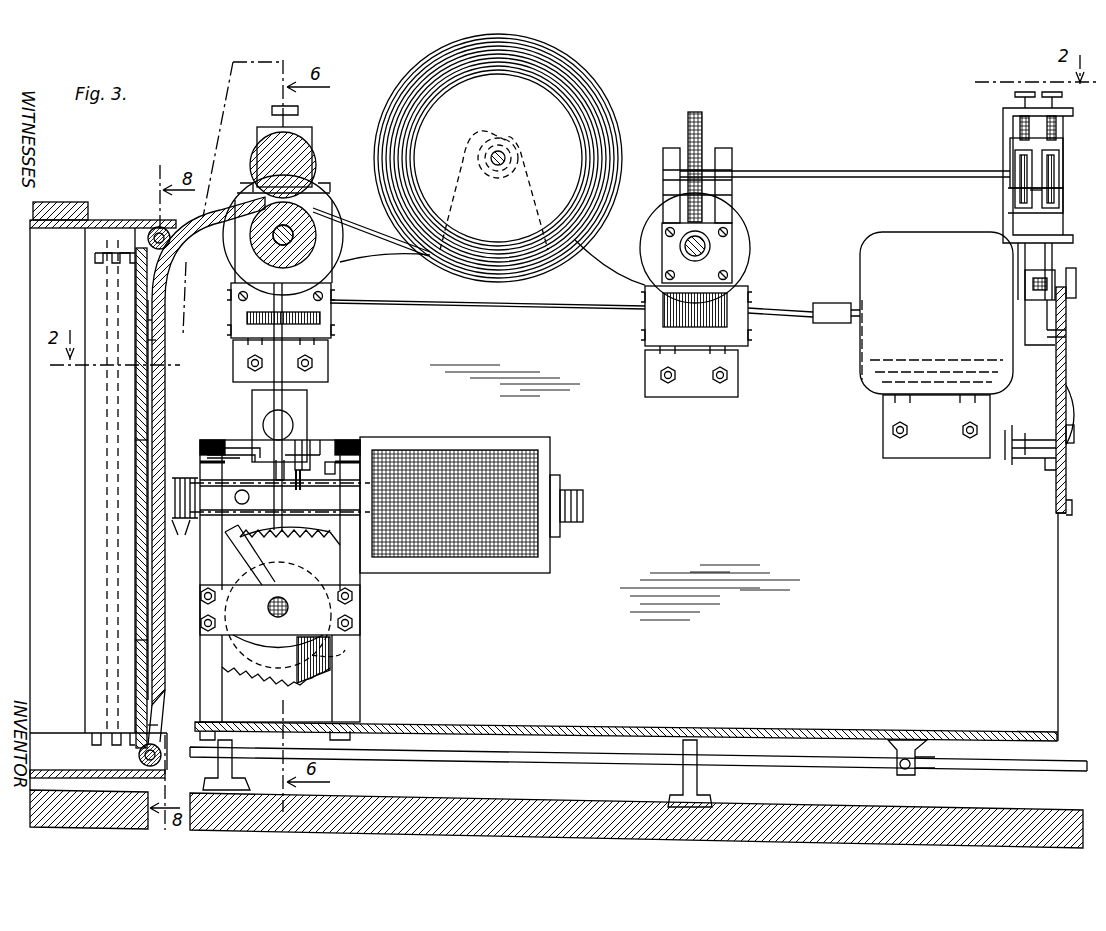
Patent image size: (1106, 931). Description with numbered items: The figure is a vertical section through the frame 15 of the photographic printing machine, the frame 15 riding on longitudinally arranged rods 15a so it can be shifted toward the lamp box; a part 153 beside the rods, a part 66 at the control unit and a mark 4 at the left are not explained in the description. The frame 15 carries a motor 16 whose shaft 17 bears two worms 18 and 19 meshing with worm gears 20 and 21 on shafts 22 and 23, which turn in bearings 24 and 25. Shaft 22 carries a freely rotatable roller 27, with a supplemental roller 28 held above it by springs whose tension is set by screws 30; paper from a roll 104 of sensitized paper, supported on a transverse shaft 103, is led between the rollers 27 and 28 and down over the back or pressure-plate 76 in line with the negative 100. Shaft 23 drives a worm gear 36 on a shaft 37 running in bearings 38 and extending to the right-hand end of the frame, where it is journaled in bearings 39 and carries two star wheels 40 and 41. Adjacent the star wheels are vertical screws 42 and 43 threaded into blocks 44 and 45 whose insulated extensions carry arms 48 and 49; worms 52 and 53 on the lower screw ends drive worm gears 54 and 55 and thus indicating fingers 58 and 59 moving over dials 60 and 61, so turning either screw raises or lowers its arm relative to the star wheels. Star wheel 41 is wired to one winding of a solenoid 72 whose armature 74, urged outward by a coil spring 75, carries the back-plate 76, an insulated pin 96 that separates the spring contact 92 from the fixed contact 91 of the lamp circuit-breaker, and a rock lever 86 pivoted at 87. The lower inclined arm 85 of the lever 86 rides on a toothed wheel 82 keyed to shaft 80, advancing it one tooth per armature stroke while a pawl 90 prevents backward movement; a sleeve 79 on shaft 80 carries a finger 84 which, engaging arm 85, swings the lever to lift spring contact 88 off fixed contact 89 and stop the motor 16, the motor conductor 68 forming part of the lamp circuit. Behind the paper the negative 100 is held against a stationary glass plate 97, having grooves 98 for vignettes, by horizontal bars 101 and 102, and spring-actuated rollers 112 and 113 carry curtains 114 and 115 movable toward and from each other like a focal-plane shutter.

The housing wall 4 is at (35, 300).
The frame 15 is at (626, 627).
The rods 15a is at (828, 766).
The motor 16 is at (936, 345).
The shaft 17 is at (830, 325).
The worm 18 is at (320, 322).
The worm 19 is at (665, 320).
The worm gear 20 is at (330, 213).
The worm gear 21 is at (645, 243).
The shaft 22 is at (290, 240).
The shaft 23 is at (708, 248).
The bearing 24 is at (330, 270).
The bearing 25 is at (645, 298).
The roller 27 is at (260, 240).
The supplemental roller 28 is at (255, 155).
The screws 30 is at (272, 110).
The worm gear 36 is at (700, 118).
The shaft 37 is at (798, 178).
The bearings 38 is at (735, 152).
The bearings 39 is at (1003, 165).
The star wheel 40 is at (1058, 195).
The star wheel 41 is at (1015, 193).
The vertical screw 42 is at (1058, 130).
The vertical screw 43 is at (1018, 128).
The block 44 is at (1063, 148).
The block 45 is at (1015, 155).
The arm 48 is at (1059, 160).
The arm 49 is at (1020, 160).
The worm 52 is at (1040, 281).
The worm 53 is at (1020, 432).
The worm gear 54 is at (1048, 325).
The worm gear 55 is at (1025, 462).
The indicating finger 58 is at (1068, 282).
The indicating finger 59 is at (1066, 410).
The dial 60 is at (1066, 346).
The dial 61 is at (1066, 470).
The magnet coil 66 is at (200, 445).
The motor conductor 68 is at (185, 462).
The solenoid 72 is at (540, 547).
The armature 74 is at (330, 498).
The coil spring 75 is at (181, 536).
The back-plate 76 is at (180, 572).
The sleeve 79 is at (272, 614).
The shaft 80 is at (278, 615).
The toothed wheel 82 is at (330, 560).
The finger 84 is at (270, 572).
The arm 85 is at (274, 525).
The rock lever 86 is at (275, 472).
The pivot 87 is at (262, 497).
The spring contact 88 is at (250, 432).
The contact 89 is at (231, 459).
The pawl 90 is at (322, 683).
The fixed contact 91 is at (310, 440).
The spring contact 92 is at (315, 457).
The insulated pin 96 is at (307, 489).
The stationary glass plate 97 is at (140, 450).
The grooves 98 is at (113, 269).
The negative 100 is at (138, 497).
The bar 101 is at (150, 338).
The bar 102 is at (140, 648).
The transverse shaft 103 is at (495, 175).
The roll 104 is at (430, 60).
The roller 112 is at (148, 238).
The roller 113 is at (139, 758).
The curtain 114 is at (148, 316).
The curtain 115 is at (147, 708).
The bracket 153 is at (937, 778).